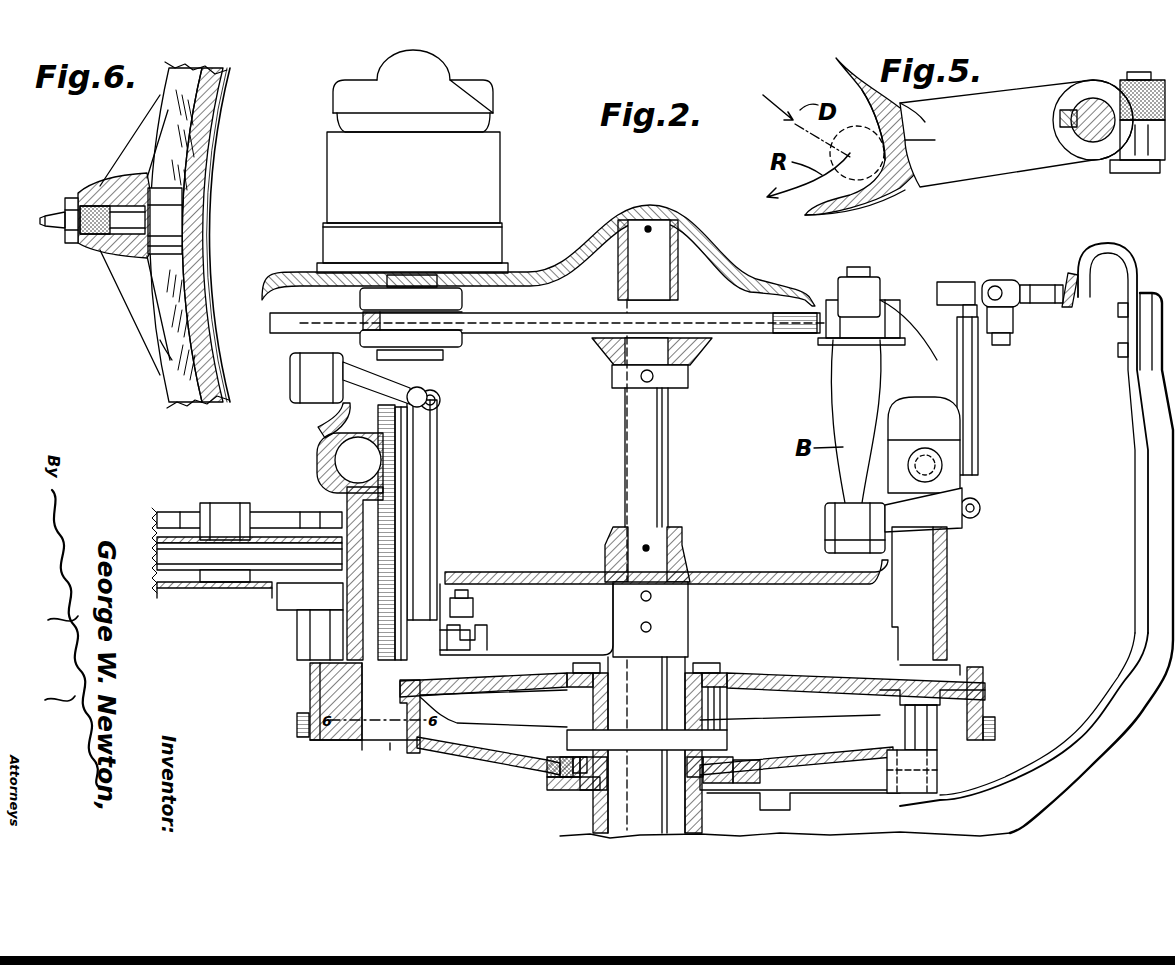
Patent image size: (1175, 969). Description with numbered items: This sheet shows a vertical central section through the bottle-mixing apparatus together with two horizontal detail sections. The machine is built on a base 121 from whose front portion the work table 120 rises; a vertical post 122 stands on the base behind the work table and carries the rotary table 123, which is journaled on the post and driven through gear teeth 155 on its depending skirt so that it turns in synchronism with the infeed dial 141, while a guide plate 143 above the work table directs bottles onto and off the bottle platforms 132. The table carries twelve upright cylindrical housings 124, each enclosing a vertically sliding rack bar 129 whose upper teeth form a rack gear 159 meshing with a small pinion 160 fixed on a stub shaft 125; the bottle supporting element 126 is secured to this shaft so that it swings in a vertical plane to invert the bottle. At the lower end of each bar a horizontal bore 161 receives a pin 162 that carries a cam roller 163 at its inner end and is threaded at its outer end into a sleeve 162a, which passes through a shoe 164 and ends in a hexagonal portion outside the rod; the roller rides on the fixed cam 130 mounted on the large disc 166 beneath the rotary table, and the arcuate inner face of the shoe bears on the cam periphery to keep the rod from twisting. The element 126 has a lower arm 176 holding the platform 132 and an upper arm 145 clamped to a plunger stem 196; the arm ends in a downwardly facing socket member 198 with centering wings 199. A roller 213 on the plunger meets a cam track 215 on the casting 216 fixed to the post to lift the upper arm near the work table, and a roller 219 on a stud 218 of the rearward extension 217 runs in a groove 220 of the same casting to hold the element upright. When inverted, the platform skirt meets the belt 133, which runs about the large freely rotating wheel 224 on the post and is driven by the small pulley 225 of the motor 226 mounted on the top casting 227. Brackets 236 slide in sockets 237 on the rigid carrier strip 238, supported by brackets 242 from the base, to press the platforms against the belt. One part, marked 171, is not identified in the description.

In FIG. 6, the cam track 130 is at (181, 397).
In FIG. 2, the cam track 130 is at (414, 751).
In FIG. 6, the cam roller 163 is at (167, 222).
In FIG. 2, the cam roller 163 is at (400, 746).
In FIG. 6, the shoe 164 is at (134, 326).
In FIG. 6, the rack bar 129 is at (110, 266).
In FIG. 2, the rack bar 129 is at (395, 562).
In FIG. 6, the pin 162 is at (127, 212).
In FIG. 6, the sleeve 162a is at (91, 241).
In FIG. 6, the bore 161 is at (110, 200).
In FIG. 6, the rim flange 171 is at (160, 352).
In FIG. 5, the bottle centering guides 199 is at (836, 66).
In FIG. 2, the bottle centering guides 199 is at (827, 513).
In FIG. 5, the socket member 198 is at (892, 217).
In FIG. 2, the socket member 198 is at (827, 546).
In FIG. 5, the upper arm 145 is at (950, 165).
In FIG. 2, the upper arm 145 is at (913, 518).
In FIG. 5, the plunger stem 196 is at (1093, 140).
In FIG. 2, the plunger stem 196 is at (962, 478).
In FIG. 2, the motor 226 is at (483, 176).
In FIG. 2, the top casting 227 is at (578, 261).
In FIG. 2, the vertical post 122 is at (648, 453).
In FIG. 2, the belt 133 is at (723, 326).
In FIG. 2, the wheel 224 is at (790, 335).
In FIG. 2, the pulley 225 is at (378, 297).
In FIG. 2, the platform 132 is at (828, 346).
In FIG. 2, the lower arm 176 is at (927, 272).
In FIG. 2, the roller 213 is at (955, 286).
In FIG. 2, the roller 219 is at (982, 288).
In FIG. 2, the stud 218 is at (1008, 334).
In FIG. 2, the rearward extension 217 is at (990, 348).
In FIG. 2, the brackets 236 is at (1019, 284).
In FIG. 2, the sockets 237 is at (1063, 302).
In FIG. 2, the carrier strip 238 is at (1075, 267).
In FIG. 2, the brackets 242 is at (1144, 410).
In FIG. 2, the bottle supporting element 126 is at (957, 424).
In FIG. 2, the stub shaft 125 is at (963, 456).
In FIG. 2, the housing 124 is at (948, 584).
In FIG. 2, the pinion 160 is at (330, 445).
In FIG. 2, the rack gear 159 is at (355, 411).
In FIG. 2, the infeed dial 141 is at (270, 492).
In FIG. 2, the guide plate 143 is at (333, 537).
In FIG. 2, the work table 120 is at (262, 591).
In FIG. 2, the cam track 215 is at (490, 572).
In FIG. 2, the groove 220 is at (473, 623).
In FIG. 2, the casting 216 is at (507, 654).
In FIG. 2, the rotary table 123 is at (748, 673).
In FIG. 2, the gear teeth 155 is at (997, 723).
In FIG. 2, the disc 166 is at (491, 762).
In FIG. 2, the base 121 is at (593, 814).